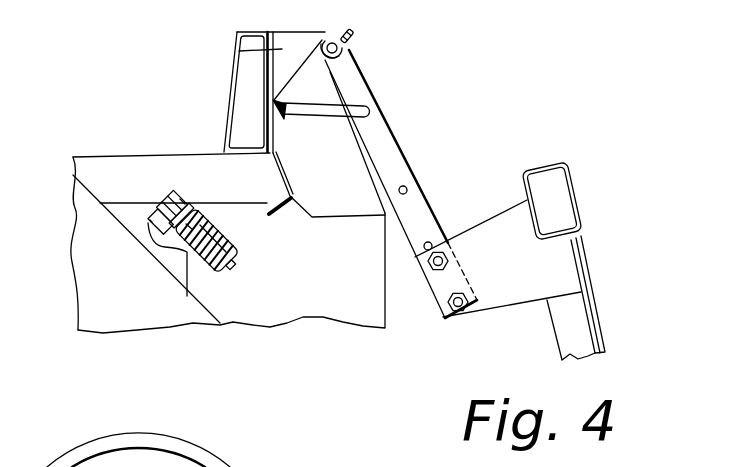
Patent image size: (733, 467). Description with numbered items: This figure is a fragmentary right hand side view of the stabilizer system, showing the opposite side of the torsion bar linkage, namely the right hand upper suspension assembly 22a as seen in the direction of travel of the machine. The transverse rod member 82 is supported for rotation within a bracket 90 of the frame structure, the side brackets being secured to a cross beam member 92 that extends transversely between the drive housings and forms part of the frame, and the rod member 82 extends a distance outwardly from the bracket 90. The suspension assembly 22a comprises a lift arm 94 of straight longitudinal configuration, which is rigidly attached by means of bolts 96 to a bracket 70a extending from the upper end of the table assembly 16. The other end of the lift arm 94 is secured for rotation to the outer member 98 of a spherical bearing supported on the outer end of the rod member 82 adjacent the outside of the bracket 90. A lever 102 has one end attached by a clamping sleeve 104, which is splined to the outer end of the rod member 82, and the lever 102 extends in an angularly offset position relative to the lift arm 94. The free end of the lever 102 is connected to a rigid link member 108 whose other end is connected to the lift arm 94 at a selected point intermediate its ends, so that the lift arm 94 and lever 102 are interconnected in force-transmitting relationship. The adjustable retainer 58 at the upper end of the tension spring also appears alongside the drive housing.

The table assembly 16 is at (604, 329).
The right hand upper suspension assembly 22a is at (403, 128).
The adjustable retainer 58 is at (190, 228).
The bracket 70a is at (512, 283).
The transverse rod member 82 is at (354, 42).
The bracket 90 is at (237, 37).
The cross beam member 92 is at (265, 68).
The lift arm 94 is at (410, 176).
The bolts 96 is at (427, 275).
The outer member 98 is at (350, 52).
The lever 102 is at (274, 96).
The clamping sleeve 104 is at (323, 35).
The rigid link member 108 is at (322, 114).